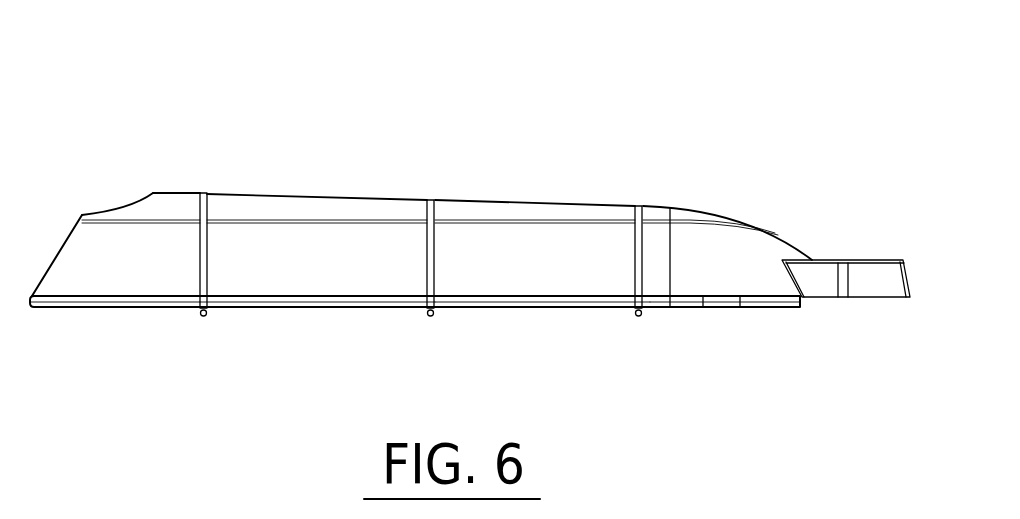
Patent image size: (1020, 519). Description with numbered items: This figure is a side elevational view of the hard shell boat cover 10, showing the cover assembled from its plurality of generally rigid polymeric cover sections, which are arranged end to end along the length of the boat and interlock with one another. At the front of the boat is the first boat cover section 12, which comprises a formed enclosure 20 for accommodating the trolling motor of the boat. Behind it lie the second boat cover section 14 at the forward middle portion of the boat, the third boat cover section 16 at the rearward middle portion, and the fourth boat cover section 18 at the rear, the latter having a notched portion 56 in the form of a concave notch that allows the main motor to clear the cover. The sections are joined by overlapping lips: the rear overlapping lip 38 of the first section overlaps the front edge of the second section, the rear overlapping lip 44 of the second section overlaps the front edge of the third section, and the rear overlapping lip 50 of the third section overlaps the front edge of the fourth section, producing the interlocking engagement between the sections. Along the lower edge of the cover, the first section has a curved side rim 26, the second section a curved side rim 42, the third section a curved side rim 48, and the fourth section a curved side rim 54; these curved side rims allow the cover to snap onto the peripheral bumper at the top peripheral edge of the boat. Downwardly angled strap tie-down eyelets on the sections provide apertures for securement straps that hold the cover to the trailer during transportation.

The hard shell boat cover 10 is at (128, 354).
The first boat cover section 12 is at (740, 240).
The second boat cover section 14 is at (533, 242).
The third boat cover section 16 is at (325, 242).
The fourth boat cover section 18 is at (153, 243).
The formed enclosure 20 is at (878, 278).
The curved side rim 26 is at (733, 306).
The rear overlapping lip 38 is at (643, 248).
The curved side rim 42 is at (537, 306).
The rear overlapping lip 44 is at (435, 248).
The curved side rim 48 is at (325, 306).
The rear overlapping lip 50 is at (207, 249).
The curved side rim 54 is at (92, 300).
The notched portion 56 is at (120, 208).